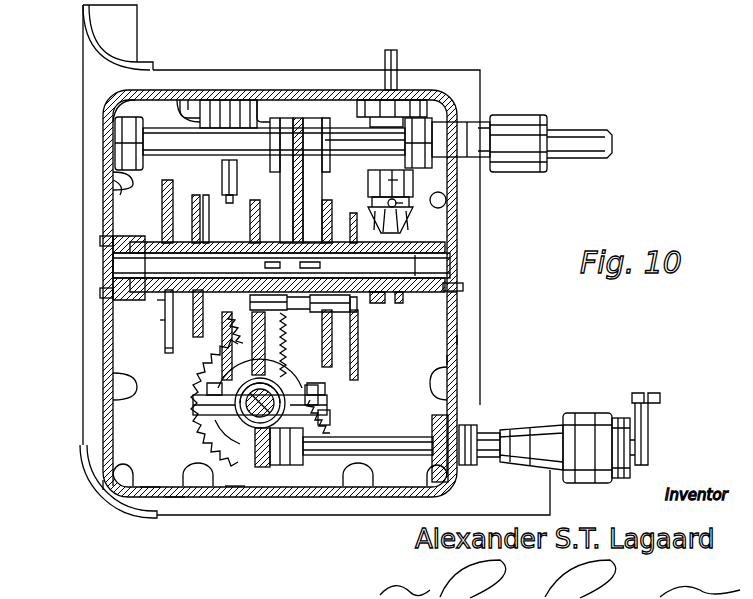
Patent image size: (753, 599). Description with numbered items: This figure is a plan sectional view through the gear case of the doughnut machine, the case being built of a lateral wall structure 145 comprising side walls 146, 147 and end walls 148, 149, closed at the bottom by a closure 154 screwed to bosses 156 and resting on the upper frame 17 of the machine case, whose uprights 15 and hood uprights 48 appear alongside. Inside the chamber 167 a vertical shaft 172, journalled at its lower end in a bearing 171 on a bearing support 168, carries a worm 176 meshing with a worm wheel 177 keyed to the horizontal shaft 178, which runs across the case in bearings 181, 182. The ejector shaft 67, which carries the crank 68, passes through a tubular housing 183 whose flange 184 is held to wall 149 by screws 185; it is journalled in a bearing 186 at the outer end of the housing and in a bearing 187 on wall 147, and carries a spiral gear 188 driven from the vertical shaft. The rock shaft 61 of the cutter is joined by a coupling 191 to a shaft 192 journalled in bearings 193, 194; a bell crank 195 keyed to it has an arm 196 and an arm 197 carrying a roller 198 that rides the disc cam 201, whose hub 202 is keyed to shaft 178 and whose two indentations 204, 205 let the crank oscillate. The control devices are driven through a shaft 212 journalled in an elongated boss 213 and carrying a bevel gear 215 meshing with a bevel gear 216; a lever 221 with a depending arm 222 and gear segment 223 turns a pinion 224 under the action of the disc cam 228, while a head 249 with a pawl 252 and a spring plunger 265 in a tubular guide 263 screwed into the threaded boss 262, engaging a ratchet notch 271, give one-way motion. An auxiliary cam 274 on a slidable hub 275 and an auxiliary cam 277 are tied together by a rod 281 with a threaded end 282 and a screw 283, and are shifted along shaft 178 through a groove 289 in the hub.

The uprights 15 is at (82, 480).
The upper and lower frames 17 is at (330, 507).
The uprights 48 is at (90, 38).
The rock shaft 61 is at (577, 142).
The shaft 67 is at (387, 443).
The crank 68 is at (650, 400).
The lateral wall structure 145 is at (112, 497).
The side wall 146 is at (220, 100).
The side wall 147 is at (173, 493).
The end wall 148 is at (107, 355).
The end wall 149 is at (457, 340).
The closure 154 is at (152, 477).
The bosses 156 is at (446, 203).
The chamber 167 is at (437, 357).
The bearing support 168 is at (233, 467).
The bearing 171 is at (210, 400).
The shaft 172 is at (252, 418).
The worm 176 is at (247, 413).
The worm wheel 177 is at (330, 420).
The shaft 178 is at (440, 268).
The bearing 181 is at (107, 255).
The bearing 182 is at (457, 279).
The tubular housing 183 is at (533, 427).
The flange 184 is at (475, 405).
The screws 185 is at (480, 465).
The bearing 186 is at (602, 413).
The bearing 187 is at (290, 467).
The spiral gear 188 is at (262, 470).
The coupling 191 is at (527, 128).
The shaft 192 is at (337, 132).
The bearing 193 is at (120, 138).
The bearing 194 is at (420, 133).
The bell crank 195 is at (287, 118).
The arm 196 is at (298, 118).
The arm 197 is at (275, 118).
The roller 198 is at (334, 207).
The disc cam 201 is at (330, 347).
The hub 202 is at (283, 345).
The indentation 204 is at (318, 118).
The indentation 205 is at (318, 398).
The shaft 212 is at (393, 58).
The elongated boss 213 is at (397, 183).
The bevel gear 215 is at (403, 205).
The bevel gear 216 is at (373, 220).
The lever 221 is at (157, 305).
The arm 222 is at (160, 325).
The gear segment 223 is at (167, 352).
The pinion 224 is at (107, 213).
The disc cam 228 is at (193, 315).
The head 249 is at (213, 287).
The pawl 252 is at (203, 199).
The threaded boss 262 is at (217, 113).
The tubular guide 263 is at (227, 163).
The plunger 265 is at (232, 194).
The ratchet notch 271 is at (103, 185).
The auxiliary cam 274 is at (360, 347).
The hub 275 is at (455, 299).
The auxiliary cam 277 is at (220, 367).
The rod 281 is at (318, 300).
The threaded end 282 is at (222, 340).
The screw 283 is at (357, 297).
The groove 289 is at (393, 299).